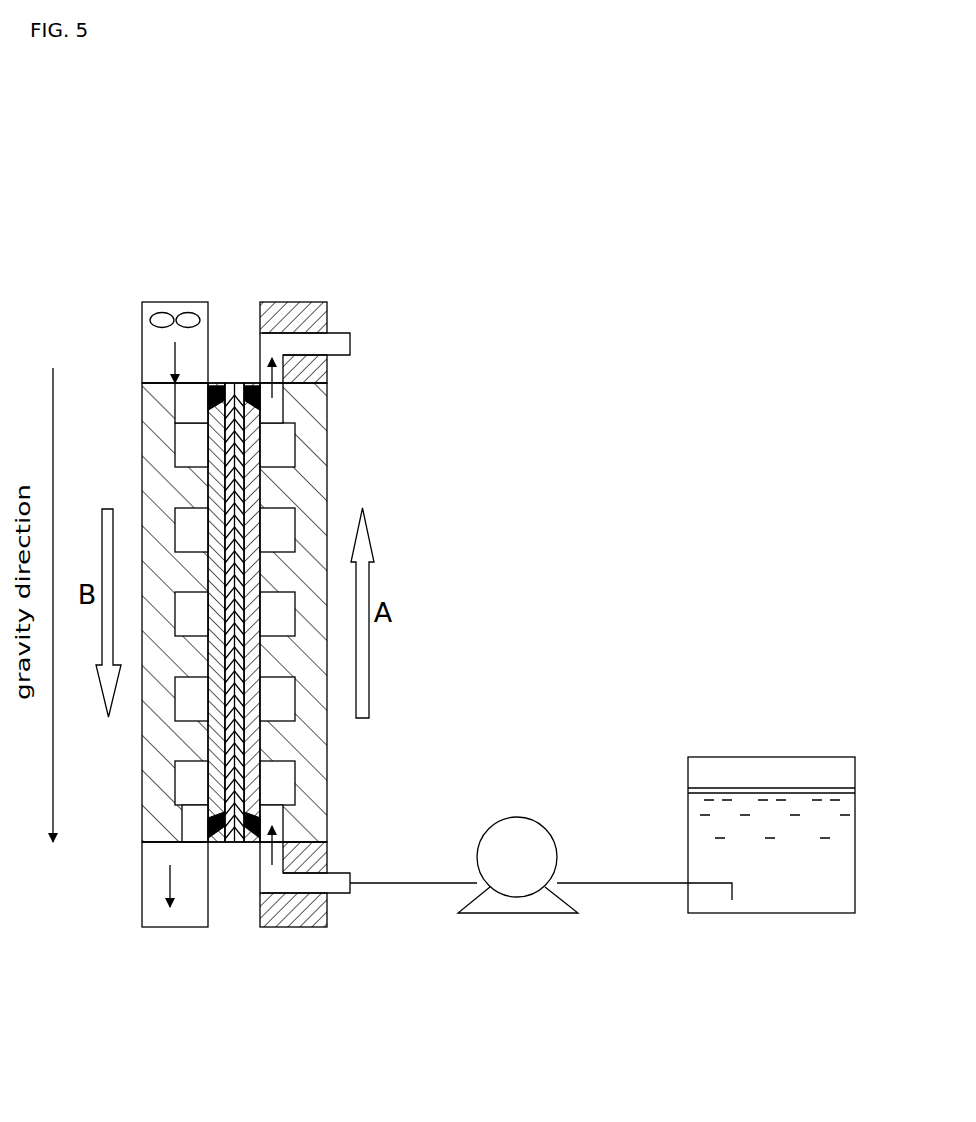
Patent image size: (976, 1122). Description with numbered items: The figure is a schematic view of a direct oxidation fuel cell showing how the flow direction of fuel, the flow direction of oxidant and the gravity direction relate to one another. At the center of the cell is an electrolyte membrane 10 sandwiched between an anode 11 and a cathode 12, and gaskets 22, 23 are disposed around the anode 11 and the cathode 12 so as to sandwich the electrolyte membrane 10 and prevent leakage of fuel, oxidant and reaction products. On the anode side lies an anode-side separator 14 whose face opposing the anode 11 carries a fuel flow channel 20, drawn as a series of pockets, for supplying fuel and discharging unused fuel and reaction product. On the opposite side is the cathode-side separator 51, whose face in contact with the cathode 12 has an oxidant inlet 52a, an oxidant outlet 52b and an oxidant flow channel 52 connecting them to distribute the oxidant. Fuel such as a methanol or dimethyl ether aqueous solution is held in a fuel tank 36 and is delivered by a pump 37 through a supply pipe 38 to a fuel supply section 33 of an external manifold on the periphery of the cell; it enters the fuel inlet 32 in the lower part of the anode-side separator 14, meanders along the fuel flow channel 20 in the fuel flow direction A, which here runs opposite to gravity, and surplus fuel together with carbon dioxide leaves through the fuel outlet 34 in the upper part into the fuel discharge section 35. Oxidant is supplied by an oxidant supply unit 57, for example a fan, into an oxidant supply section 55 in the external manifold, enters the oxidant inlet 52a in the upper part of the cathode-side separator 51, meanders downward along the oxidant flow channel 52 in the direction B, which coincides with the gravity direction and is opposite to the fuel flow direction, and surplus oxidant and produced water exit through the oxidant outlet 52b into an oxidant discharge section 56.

The electrolyte membrane 10 is at (233, 843).
The anode 11 is at (250, 775).
The cathode 12 is at (228, 781).
The anode-side separator 14 is at (316, 470).
The fuel flow channel 20 is at (283, 697).
The gasket 22 is at (248, 382).
The gasket 23 is at (218, 382).
The fuel inlet 32 is at (275, 823).
The fuel supply section 33 is at (290, 913).
The fuel outlet 34 is at (270, 412).
The fuel discharge section 35 is at (297, 342).
The fuel tank 36 is at (732, 805).
The pump 37 is at (533, 826).
The supply pipe 38 is at (405, 884).
The cathode-side separator 51 is at (155, 470).
The oxidant flow channel 52 is at (183, 706).
The oxidant inlet 52a is at (178, 402).
The oxidant outlet 52b is at (194, 822).
The oxidant supply section 55 is at (150, 347).
The oxidant discharge section 56 is at (182, 913).
The oxidant supply unit 57 is at (192, 313).